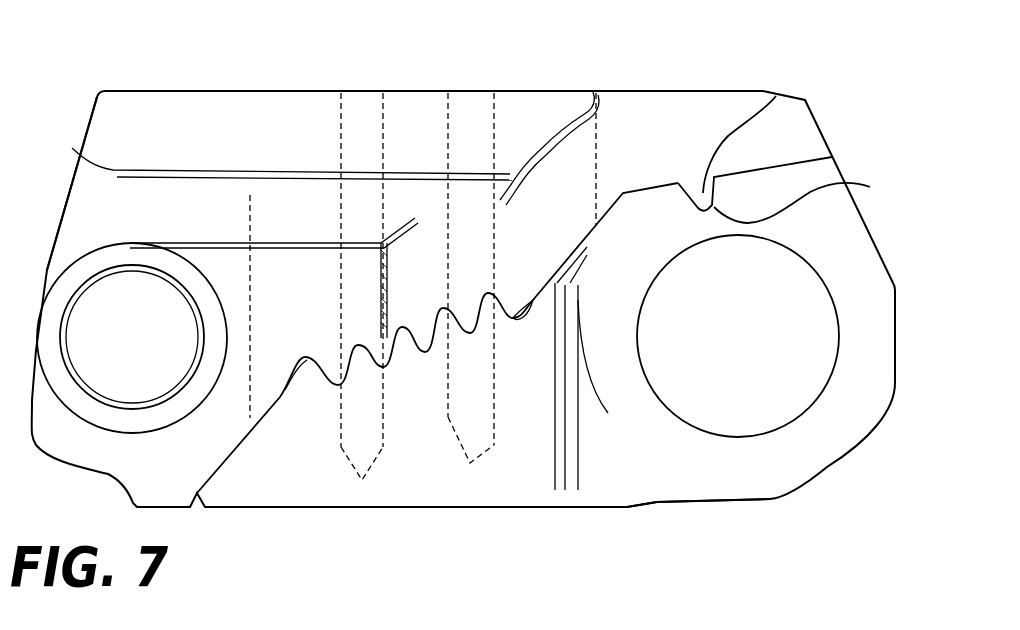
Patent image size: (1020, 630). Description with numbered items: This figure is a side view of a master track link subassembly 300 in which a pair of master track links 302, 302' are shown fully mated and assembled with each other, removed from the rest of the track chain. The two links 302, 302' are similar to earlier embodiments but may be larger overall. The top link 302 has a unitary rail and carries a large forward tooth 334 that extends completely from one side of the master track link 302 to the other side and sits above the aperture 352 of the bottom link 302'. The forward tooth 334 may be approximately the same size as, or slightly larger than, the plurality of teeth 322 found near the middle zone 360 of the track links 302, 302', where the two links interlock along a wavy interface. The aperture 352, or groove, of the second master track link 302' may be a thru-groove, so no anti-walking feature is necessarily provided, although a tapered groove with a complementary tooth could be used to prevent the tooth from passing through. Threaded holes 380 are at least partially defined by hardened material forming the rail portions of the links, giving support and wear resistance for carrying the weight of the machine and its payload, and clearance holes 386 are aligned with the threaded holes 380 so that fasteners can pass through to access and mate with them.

The master track link subassembly 300 is at (552, 82).
The master track link 302 is at (405, 144).
The master track link 302' is at (487, 428).
The teeth 322 is at (423, 337).
The forward tooth 334 is at (780, 93).
The aperture 352 is at (870, 187).
The middle zone 360 is at (373, 128).
The threaded hole 380 is at (365, 455).
The clearance hole 386 is at (345, 112).